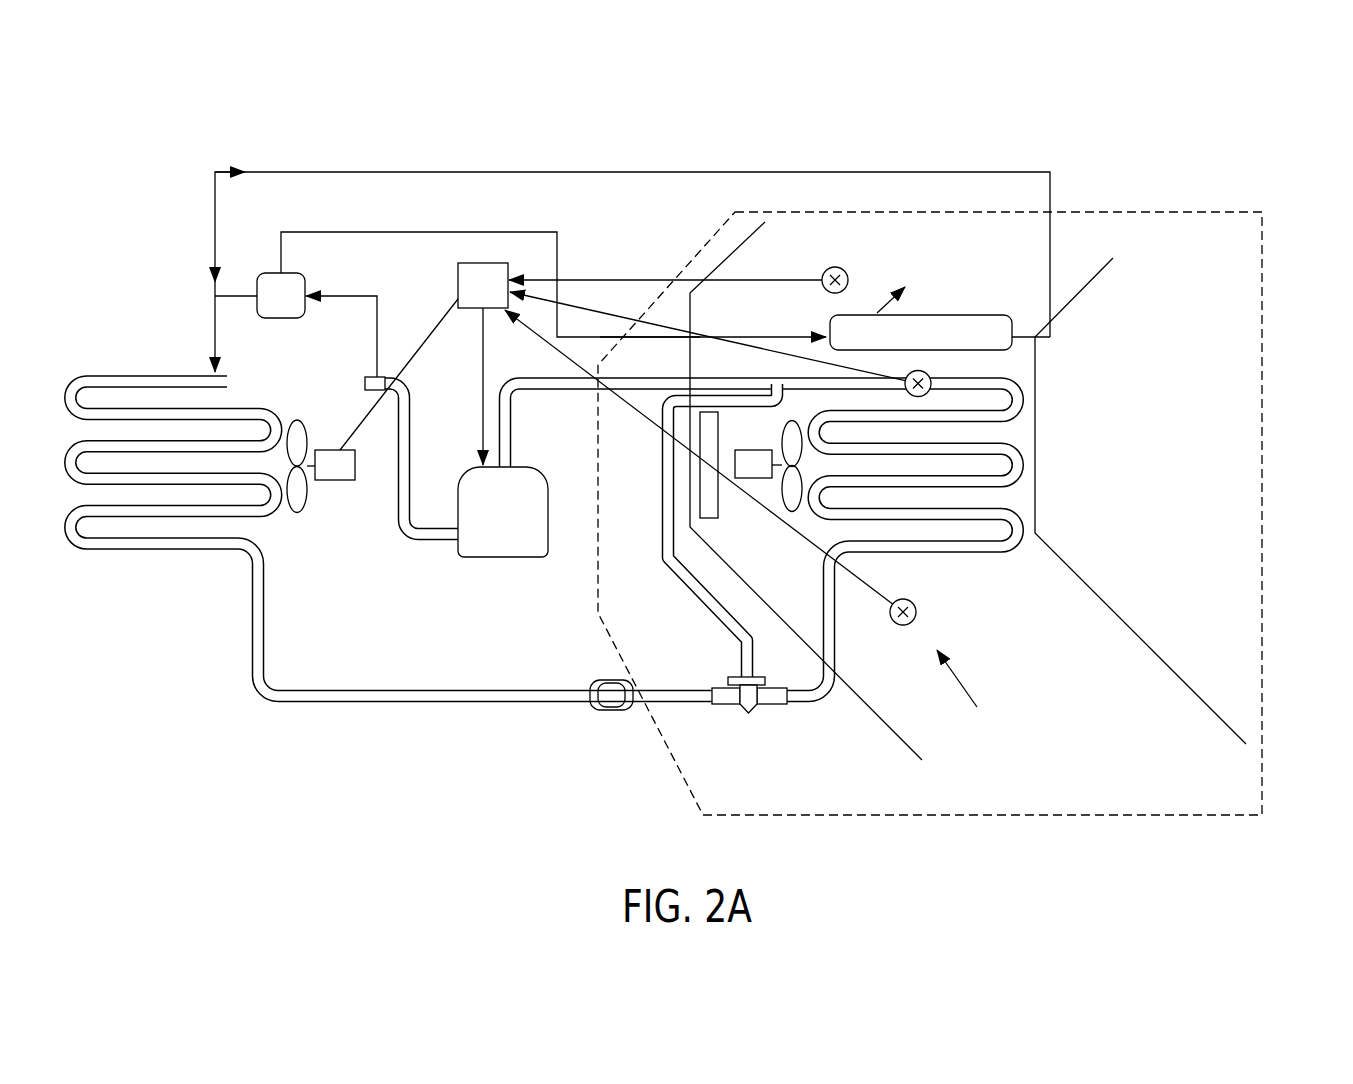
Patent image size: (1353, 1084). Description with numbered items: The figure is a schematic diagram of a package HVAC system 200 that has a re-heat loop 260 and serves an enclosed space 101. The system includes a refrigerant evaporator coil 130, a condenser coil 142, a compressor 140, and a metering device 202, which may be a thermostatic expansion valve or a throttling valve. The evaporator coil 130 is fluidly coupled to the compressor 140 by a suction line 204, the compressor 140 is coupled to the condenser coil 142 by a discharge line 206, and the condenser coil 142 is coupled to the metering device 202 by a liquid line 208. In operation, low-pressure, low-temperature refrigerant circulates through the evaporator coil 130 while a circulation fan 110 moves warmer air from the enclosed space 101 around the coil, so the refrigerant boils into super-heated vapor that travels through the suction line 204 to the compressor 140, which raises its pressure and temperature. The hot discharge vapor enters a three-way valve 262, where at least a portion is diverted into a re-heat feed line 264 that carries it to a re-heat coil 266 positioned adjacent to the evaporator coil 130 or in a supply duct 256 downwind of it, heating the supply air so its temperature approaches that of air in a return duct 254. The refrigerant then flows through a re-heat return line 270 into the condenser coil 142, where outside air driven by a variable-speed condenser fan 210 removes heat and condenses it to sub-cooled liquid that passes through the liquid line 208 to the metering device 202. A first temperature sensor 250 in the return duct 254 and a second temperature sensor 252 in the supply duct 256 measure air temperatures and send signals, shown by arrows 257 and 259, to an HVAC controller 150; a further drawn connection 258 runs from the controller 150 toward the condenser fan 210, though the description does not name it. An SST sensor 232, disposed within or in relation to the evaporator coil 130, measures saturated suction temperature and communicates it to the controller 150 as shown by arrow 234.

The enclosed space 101 is at (1262, 486).
The circulation fan 110 is at (752, 480).
The refrigerant evaporator coil 130 is at (975, 553).
The compressor 140 is at (500, 557).
The condenser coil 142 is at (175, 550).
The HVAC controller 150 is at (458, 275).
The package HVAC system 200 is at (148, 326).
The metering device 202 is at (750, 713).
The suction line 204 is at (548, 392).
The discharge line 206 is at (410, 392).
The liquid line 208 is at (467, 703).
The variable-speed condenser fan 210 is at (338, 483).
The SST sensor 232 is at (930, 394).
The arrow 234 is at (768, 352).
The first temperature sensor 250 is at (900, 625).
The second temperature sensor 252 is at (848, 273).
The return duct 254 is at (881, 718).
The supply duct 256 is at (1075, 296).
The arrow 257 is at (646, 425).
The signal line 258 is at (418, 345).
The arrow 259 is at (617, 278).
The re-heat loop 260 is at (1035, 155).
The three-way valve 262 is at (256, 274).
The re-heat feed line 264 is at (410, 232).
The re-heat coil 266 is at (1003, 355).
The re-heat return line 270 is at (650, 172).